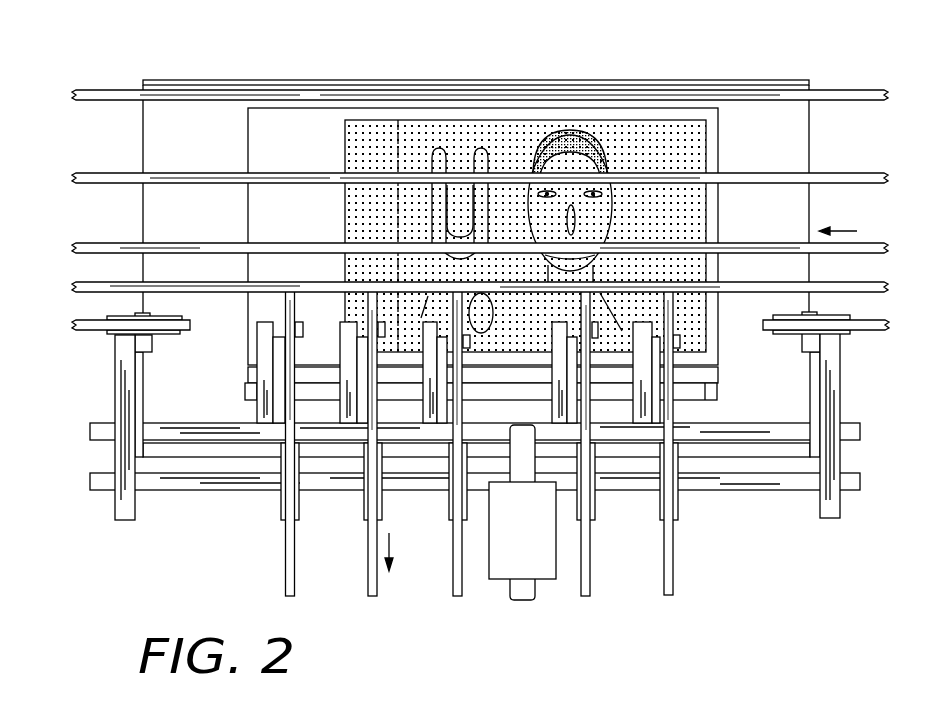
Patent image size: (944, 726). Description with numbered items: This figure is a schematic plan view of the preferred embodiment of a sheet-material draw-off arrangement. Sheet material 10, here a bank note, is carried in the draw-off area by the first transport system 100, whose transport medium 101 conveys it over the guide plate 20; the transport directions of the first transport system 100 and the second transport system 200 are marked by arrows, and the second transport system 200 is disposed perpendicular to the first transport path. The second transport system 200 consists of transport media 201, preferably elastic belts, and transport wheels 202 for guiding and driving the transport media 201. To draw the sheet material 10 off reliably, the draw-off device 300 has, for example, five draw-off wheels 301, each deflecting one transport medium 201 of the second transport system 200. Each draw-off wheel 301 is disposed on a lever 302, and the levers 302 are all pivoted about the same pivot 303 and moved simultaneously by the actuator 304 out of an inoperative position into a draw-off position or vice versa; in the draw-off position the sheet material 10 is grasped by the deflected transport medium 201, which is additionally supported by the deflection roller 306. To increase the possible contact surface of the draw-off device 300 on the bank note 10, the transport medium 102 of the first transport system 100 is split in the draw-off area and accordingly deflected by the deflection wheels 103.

The sheet material 10 is at (383, 152).
The guide plate 20 is at (170, 139).
The first transport system 100 is at (880, 216).
The transport medium 101 is at (823, 172).
The transport medium 102 is at (88, 333).
The deflection wheels 103 is at (108, 333).
The second transport system 200 is at (433, 455).
The transport media 201 is at (293, 556).
The transport wheels 202 is at (282, 508).
The draw-off device 300 is at (475, 486).
The draw-off wheel 301 is at (673, 358).
The lever 302 is at (642, 374).
The pivot 303 is at (797, 437).
The actuator 304 is at (537, 557).
The deflection roller 306 is at (693, 357).